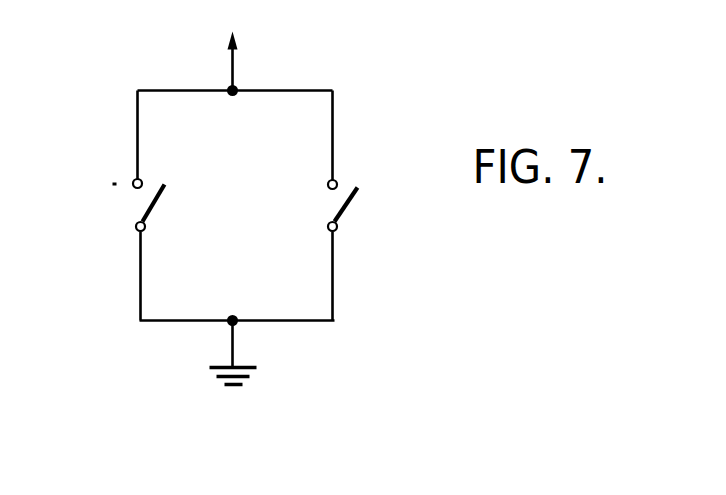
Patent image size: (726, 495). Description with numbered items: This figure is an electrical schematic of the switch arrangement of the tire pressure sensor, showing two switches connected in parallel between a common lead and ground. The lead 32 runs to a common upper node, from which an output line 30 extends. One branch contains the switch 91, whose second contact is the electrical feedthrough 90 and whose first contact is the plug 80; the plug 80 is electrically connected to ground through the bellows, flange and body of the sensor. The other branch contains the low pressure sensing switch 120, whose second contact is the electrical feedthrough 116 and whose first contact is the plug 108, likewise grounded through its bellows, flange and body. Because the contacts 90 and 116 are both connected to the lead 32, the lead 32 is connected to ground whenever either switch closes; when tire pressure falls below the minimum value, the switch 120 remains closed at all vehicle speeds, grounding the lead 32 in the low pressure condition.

The output line 30 is at (232, 50).
The lead 32 is at (234, 72).
The plug 80 is at (136, 233).
The electrical feedthrough 90 is at (134, 180).
The switch 91 is at (128, 201).
The plug 108 is at (338, 232).
The electrical feedthrough 116 is at (337, 180).
The low pressure sensing switch 120 is at (347, 184).